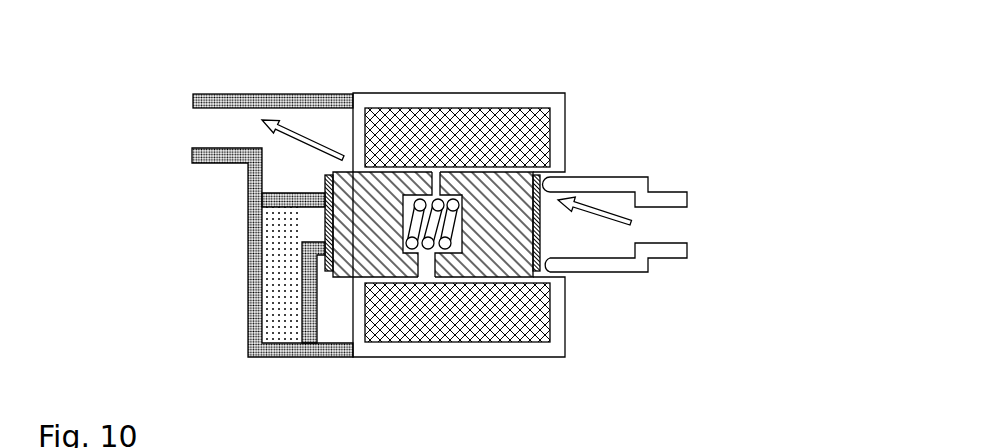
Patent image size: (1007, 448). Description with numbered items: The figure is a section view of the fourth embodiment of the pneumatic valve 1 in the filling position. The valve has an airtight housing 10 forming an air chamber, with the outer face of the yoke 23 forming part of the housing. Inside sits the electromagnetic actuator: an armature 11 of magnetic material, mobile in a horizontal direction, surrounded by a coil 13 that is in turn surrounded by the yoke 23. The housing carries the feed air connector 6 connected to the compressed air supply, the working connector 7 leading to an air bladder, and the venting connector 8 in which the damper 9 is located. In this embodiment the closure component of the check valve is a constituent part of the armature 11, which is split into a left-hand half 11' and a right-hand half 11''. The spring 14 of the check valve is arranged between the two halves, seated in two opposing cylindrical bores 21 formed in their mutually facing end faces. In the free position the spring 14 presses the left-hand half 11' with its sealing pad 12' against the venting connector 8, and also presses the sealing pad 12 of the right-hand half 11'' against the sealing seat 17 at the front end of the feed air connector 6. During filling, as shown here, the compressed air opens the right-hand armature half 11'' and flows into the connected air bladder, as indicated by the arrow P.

The pneumatic valve 1 is at (584, 68).
The feed air connector 6 is at (678, 225).
The working connector 7 is at (196, 128).
The venting connector 8 is at (311, 224).
The damper 9 is at (283, 342).
The housing 10 is at (269, 93).
The armature 11 is at (433, 157).
The left-hand armature half 11' is at (335, 310).
The right-hand armature half 11'' is at (584, 152).
The sealing pad 12 is at (526, 299).
The sealing pad 12' is at (332, 191).
The coil 13 is at (500, 127).
The spring 14 is at (446, 175).
The sealing seat 17 is at (550, 193).
The cylindrical bores 21 is at (417, 252).
The yoke 23 is at (413, 100).
The arrow P is at (304, 136).